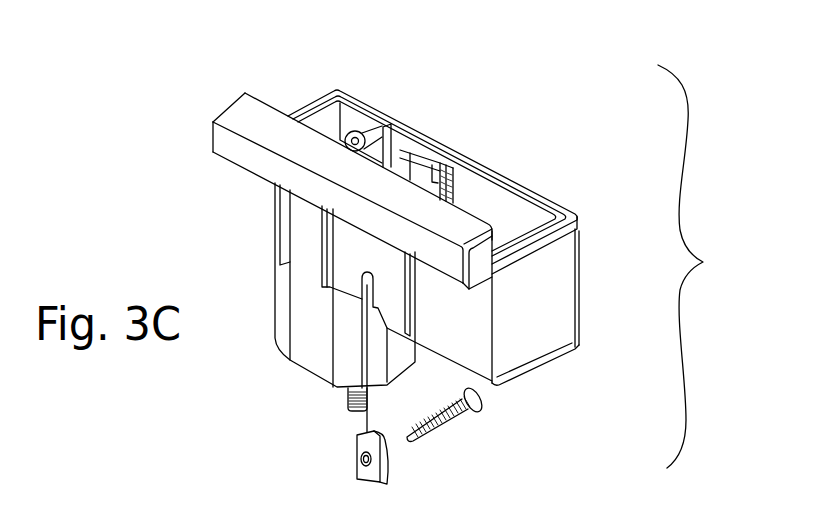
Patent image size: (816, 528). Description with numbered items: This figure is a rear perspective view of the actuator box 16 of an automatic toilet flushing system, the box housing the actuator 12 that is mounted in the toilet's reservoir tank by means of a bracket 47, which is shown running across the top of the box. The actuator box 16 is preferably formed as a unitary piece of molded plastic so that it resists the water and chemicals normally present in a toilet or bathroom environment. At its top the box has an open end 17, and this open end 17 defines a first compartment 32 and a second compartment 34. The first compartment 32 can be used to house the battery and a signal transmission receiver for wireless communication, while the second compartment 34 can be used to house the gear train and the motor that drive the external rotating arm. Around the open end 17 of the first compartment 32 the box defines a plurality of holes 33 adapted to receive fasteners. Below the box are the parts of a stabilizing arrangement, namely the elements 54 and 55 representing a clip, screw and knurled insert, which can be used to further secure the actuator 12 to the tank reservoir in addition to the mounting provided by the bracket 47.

The actuator 12 is at (704, 266).
The actuator box 16 is at (580, 316).
The open end 17 is at (520, 220).
The first compartment 32 is at (357, 124).
The holes 33 is at (337, 89).
The second compartment 34 is at (503, 206).
The bracket 47 is at (245, 112).
The screw 54 is at (470, 414).
The clip 55 is at (354, 472).